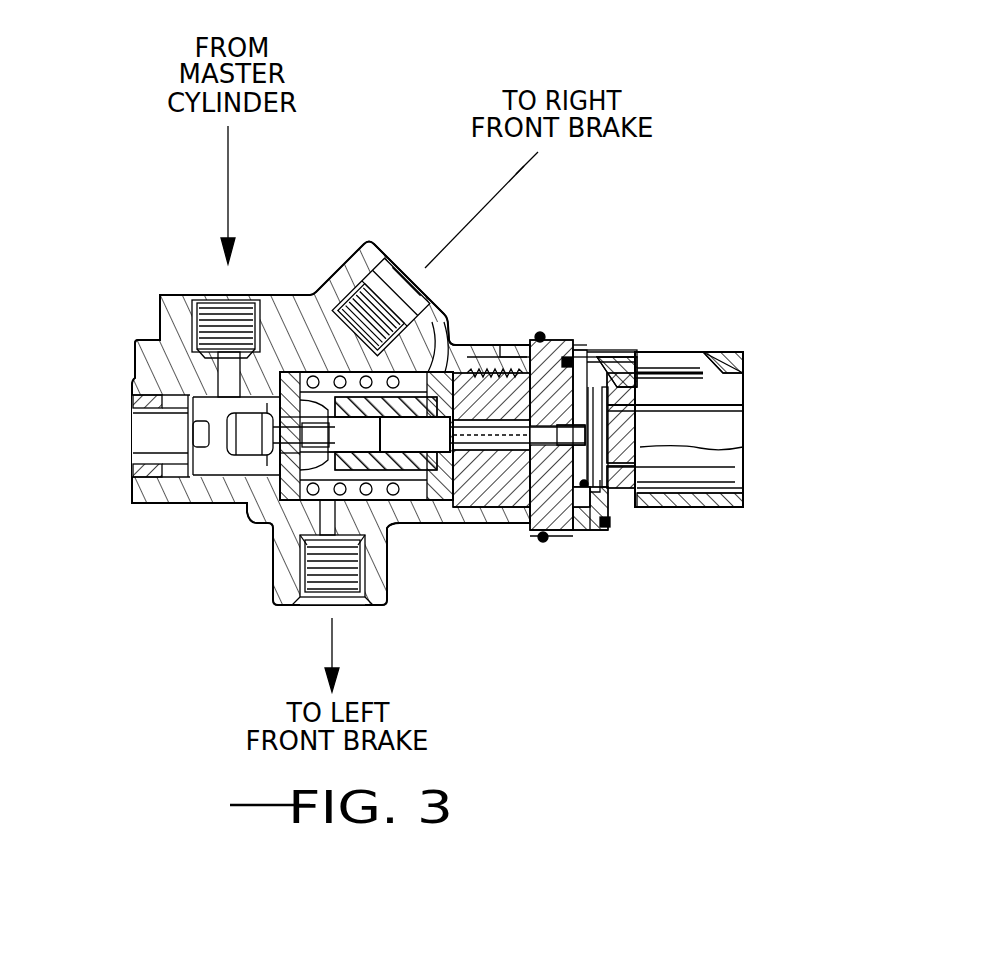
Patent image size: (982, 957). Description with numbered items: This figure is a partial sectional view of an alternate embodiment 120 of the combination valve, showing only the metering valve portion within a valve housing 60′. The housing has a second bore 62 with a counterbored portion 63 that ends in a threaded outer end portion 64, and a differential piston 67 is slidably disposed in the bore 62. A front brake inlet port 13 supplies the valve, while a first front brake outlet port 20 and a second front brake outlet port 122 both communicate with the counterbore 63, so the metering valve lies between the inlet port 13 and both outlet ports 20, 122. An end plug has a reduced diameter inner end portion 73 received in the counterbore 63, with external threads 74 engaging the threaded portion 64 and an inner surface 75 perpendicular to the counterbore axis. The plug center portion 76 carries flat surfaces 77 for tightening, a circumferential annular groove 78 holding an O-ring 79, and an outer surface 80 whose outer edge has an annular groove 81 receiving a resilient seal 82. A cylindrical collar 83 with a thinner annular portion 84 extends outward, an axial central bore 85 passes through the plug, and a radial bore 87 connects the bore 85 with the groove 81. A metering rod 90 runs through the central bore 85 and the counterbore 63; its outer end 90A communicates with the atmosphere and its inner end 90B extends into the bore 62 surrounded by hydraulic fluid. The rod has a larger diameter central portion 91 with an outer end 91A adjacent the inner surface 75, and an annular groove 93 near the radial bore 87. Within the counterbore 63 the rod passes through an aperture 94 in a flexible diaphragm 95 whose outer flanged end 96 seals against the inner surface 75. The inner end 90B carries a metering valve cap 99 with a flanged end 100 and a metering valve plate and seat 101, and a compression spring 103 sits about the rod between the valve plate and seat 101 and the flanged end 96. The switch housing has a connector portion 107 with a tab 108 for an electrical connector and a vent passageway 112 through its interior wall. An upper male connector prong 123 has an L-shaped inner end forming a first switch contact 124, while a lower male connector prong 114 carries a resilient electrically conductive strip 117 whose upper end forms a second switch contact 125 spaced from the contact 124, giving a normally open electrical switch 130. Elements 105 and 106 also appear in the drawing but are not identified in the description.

The front brake inlet port 13 is at (214, 296).
The first front brake outlet port 20 is at (298, 605).
The valve housing 60′ is at (130, 497).
The second bore 62 is at (135, 395).
The counterbored portion 63 is at (448, 528).
The threaded outer end portion 64 is at (517, 530).
The differential piston 67 is at (140, 450).
The reduced diameter inner end portion 73 is at (491, 388).
The external threads 74 is at (505, 345).
The inner surface 75 is at (462, 350).
The center portion 76 is at (535, 334).
The flat surfaces 77 is at (555, 546).
The circumferential annular groove 78 is at (562, 348).
The O-ring 79 is at (547, 338).
The outer surface 80 is at (586, 548).
The annular groove 81 is at (570, 546).
The resilient seal 82 is at (606, 535).
The collar 83 is at (590, 352).
The thinner annular portion 84 is at (600, 360).
The axial central bore 85 is at (488, 528).
The radial bore 87 is at (546, 546).
The metering rod 90 is at (549, 435).
The outer end 90A is at (648, 518).
The inner end 90B is at (197, 503).
The larger diameter central portion 91 is at (375, 433).
The outer end 91A is at (455, 528).
The annular groove 93 is at (517, 466).
The aperture 94 is at (305, 376).
The flexible diaphragm 95 is at (318, 300).
The outer flanged end 96 is at (430, 330).
The metering valve cap 99 is at (224, 437).
The flanged end 100 is at (232, 500).
The metering valve plate and seat 101 is at (258, 525).
The compression spring 103 is at (392, 540).
The spring 105 is at (612, 355).
The spring seat 106 is at (648, 368).
The connector portion 107 is at (725, 507).
The tab 108 is at (742, 352).
The vent passageway 112 is at (645, 414).
The lower male connector prong 114 is at (720, 468).
The resilient electrically conductive strip 117 is at (743, 447).
The alternate embodiment 120 is at (612, 278).
The second front brake outlet port 122 is at (442, 298).
The upper male connector prong 123 is at (705, 402).
The first switch contact 124 is at (645, 392).
The second switch contact 125 is at (632, 368).
The normally open electrical switch 130 is at (705, 535).